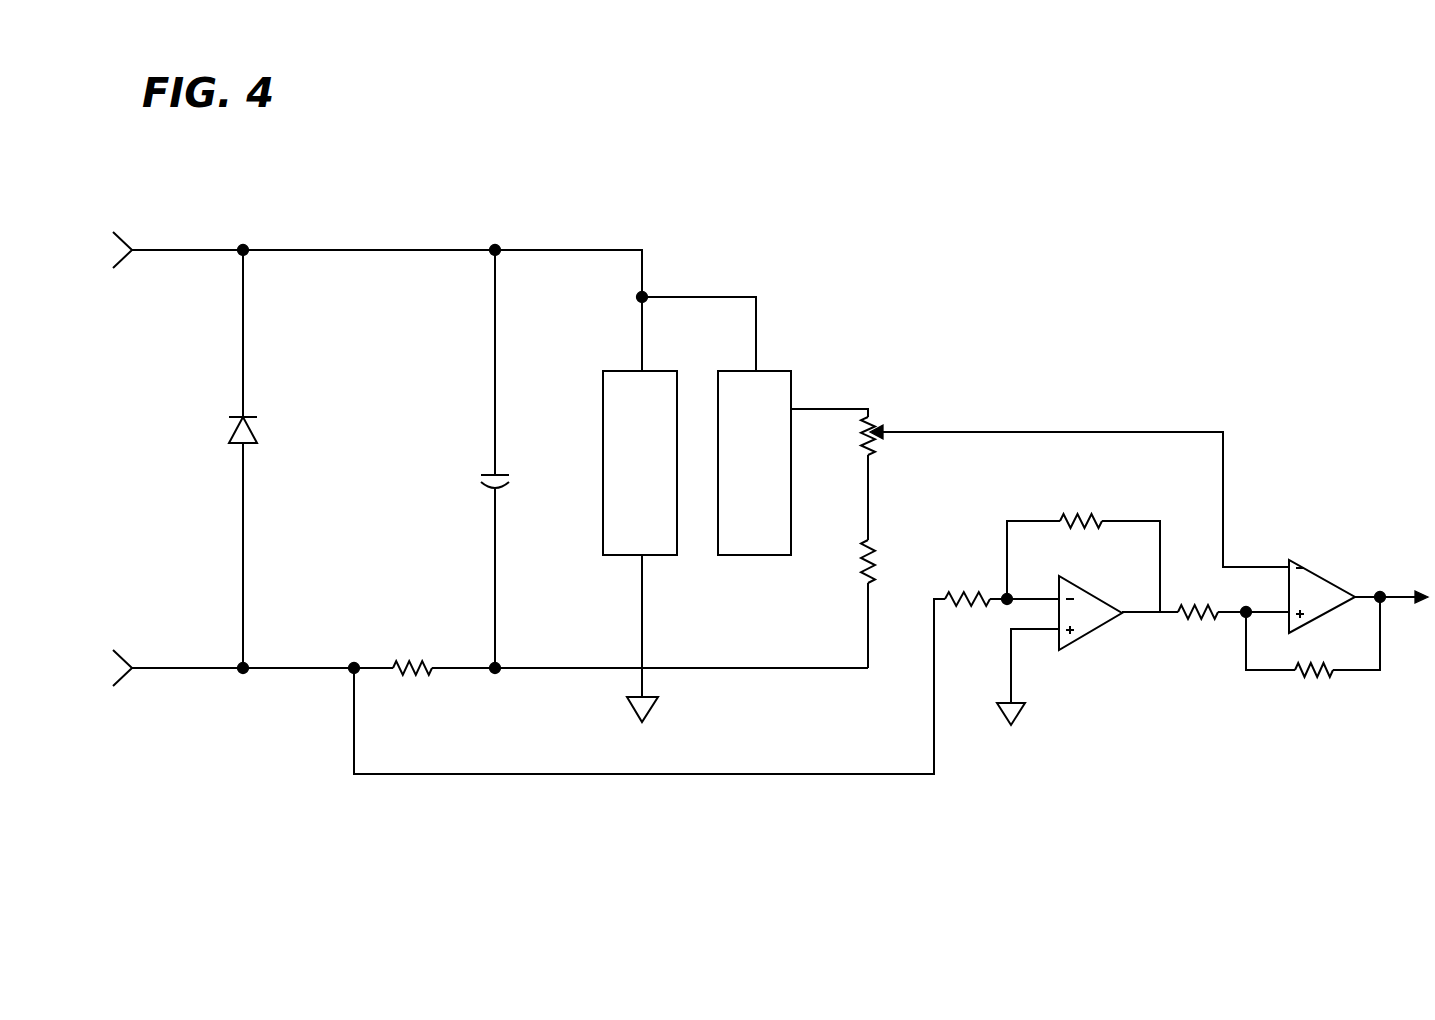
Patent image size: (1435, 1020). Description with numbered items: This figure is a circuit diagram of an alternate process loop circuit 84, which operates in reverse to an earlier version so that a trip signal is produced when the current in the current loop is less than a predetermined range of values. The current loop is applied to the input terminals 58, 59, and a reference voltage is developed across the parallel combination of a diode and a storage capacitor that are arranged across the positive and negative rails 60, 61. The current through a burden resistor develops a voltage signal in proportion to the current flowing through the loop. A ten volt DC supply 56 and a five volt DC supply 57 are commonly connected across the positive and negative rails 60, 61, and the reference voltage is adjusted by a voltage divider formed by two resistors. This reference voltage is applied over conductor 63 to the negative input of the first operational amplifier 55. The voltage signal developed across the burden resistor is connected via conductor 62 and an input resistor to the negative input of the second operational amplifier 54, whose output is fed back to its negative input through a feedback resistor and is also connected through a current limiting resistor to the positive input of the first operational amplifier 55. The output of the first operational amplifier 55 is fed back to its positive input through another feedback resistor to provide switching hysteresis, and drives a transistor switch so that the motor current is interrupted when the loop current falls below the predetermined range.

The second operational amplifier 54 is at (1088, 592).
The first operational amplifier 55 is at (1317, 573).
The 10 volt DC supply 56 is at (618, 372).
The 5 volt DC supply 57 is at (772, 370).
The input terminal 58 is at (241, 248).
The input terminal 59 is at (243, 667).
The positive rail 60 is at (360, 250).
The negative rail 61 is at (545, 668).
The conductor 62 is at (566, 773).
The conductor 63 is at (987, 432).
The process loop circuit 84 is at (897, 842).